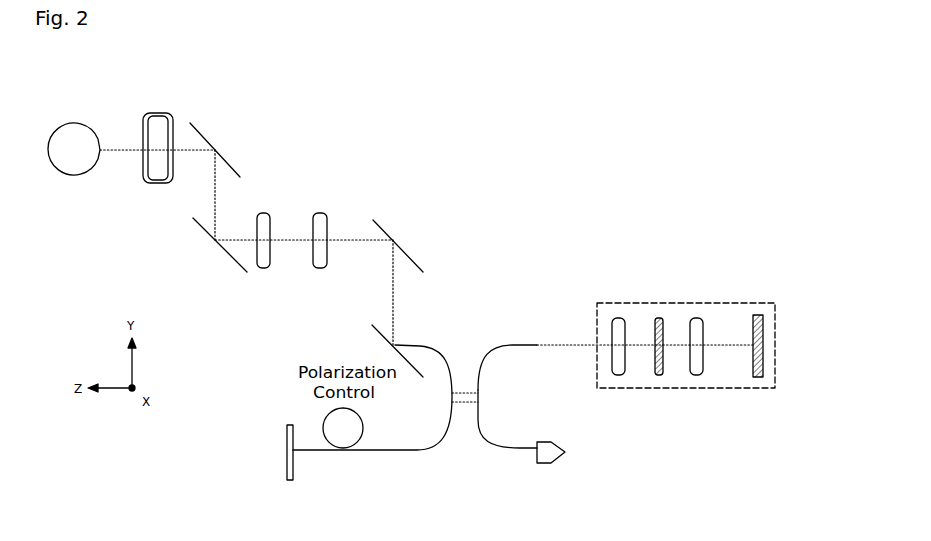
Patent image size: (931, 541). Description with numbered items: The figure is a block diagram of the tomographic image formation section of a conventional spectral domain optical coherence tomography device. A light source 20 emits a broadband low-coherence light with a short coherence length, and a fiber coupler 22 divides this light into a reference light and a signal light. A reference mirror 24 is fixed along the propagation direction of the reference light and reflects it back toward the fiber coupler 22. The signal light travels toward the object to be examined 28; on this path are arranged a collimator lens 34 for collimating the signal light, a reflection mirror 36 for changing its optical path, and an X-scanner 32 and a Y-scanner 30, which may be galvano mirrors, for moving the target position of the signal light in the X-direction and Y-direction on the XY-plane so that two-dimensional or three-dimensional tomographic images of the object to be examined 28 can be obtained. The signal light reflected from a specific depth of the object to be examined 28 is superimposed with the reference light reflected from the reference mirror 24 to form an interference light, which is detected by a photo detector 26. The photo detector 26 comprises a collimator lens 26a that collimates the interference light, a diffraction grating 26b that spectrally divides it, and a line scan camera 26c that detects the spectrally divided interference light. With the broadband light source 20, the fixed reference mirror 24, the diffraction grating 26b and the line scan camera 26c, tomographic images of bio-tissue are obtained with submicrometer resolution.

The light source 20 is at (565, 450).
The fiber coupler 22 is at (466, 393).
The reference mirror 24 is at (290, 425).
The photo detector 26 is at (693, 356).
The collimator lens 26a is at (618, 318).
The diffraction grating 26b is at (659, 318).
The line scan camera 26c is at (760, 315).
The object to be examined 28 is at (78, 122).
The Y-scanner 30 is at (384, 221).
The X-scanner 32 is at (234, 268).
The collimator lens 34 is at (158, 113).
The reflection mirror 36 is at (203, 122).